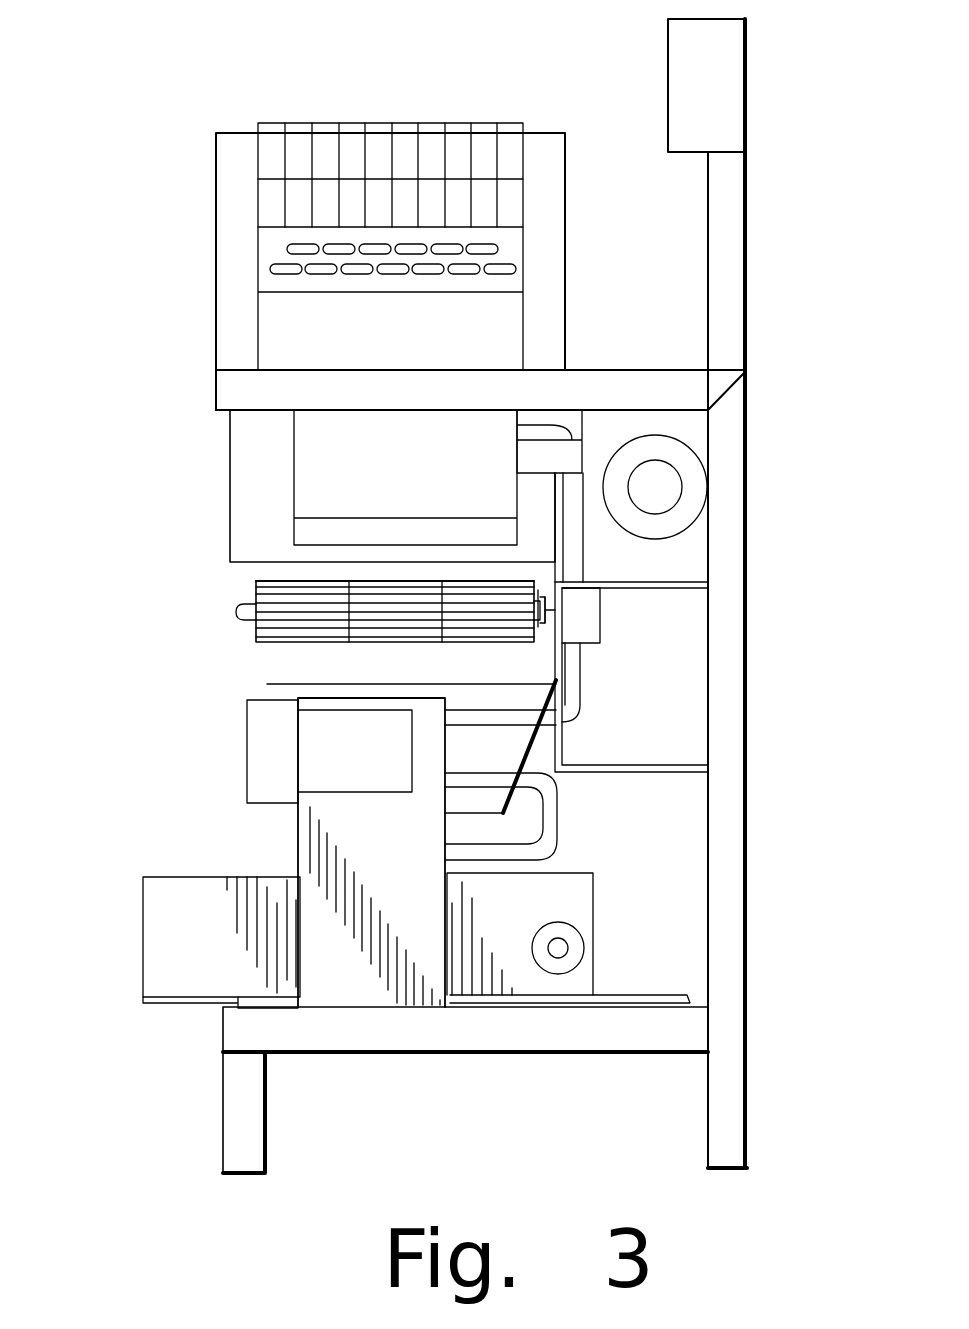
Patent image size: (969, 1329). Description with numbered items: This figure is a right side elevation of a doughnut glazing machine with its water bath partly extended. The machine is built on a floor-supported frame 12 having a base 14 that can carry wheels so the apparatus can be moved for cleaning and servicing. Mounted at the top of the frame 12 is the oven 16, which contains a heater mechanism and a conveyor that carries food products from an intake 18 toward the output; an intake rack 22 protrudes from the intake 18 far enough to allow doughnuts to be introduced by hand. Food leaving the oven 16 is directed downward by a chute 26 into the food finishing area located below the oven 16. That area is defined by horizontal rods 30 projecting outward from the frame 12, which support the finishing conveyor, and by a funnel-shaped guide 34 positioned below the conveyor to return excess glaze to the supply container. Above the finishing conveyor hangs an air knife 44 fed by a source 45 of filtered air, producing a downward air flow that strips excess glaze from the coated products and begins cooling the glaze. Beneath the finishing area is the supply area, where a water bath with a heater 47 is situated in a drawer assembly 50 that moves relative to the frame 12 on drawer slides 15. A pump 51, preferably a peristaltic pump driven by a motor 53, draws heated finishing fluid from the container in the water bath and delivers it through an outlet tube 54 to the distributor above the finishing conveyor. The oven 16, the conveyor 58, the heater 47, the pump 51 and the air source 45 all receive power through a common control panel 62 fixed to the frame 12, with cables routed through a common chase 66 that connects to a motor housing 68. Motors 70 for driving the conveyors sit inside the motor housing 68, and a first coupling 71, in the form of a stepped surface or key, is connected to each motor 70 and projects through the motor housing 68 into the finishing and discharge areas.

The frame 12 is at (740, 850).
The base 14 is at (393, 1032).
The drawer slides 15 is at (165, 1005).
The oven 16 is at (242, 147).
The intake 18 is at (297, 207).
The intake rack 22 is at (355, 130).
The chute 26 is at (230, 447).
The horizontal rods 30 is at (238, 613).
The funnel-shaped guide 34 is at (270, 698).
The air knife 44 is at (316, 490).
The source of filtered air 45 is at (665, 488).
The heater 47 is at (570, 948).
The drawer assembly 50 is at (150, 930).
The pump 51 is at (252, 745).
The motor 53 is at (312, 757).
The outlet tube 54 is at (542, 430).
The conveyor 58 is at (290, 597).
The control panel 62 is at (735, 68).
The common chase 66 is at (737, 287).
The motor housing 68 is at (657, 770).
The motors 70 is at (590, 625).
The first coupling 71 is at (540, 595).